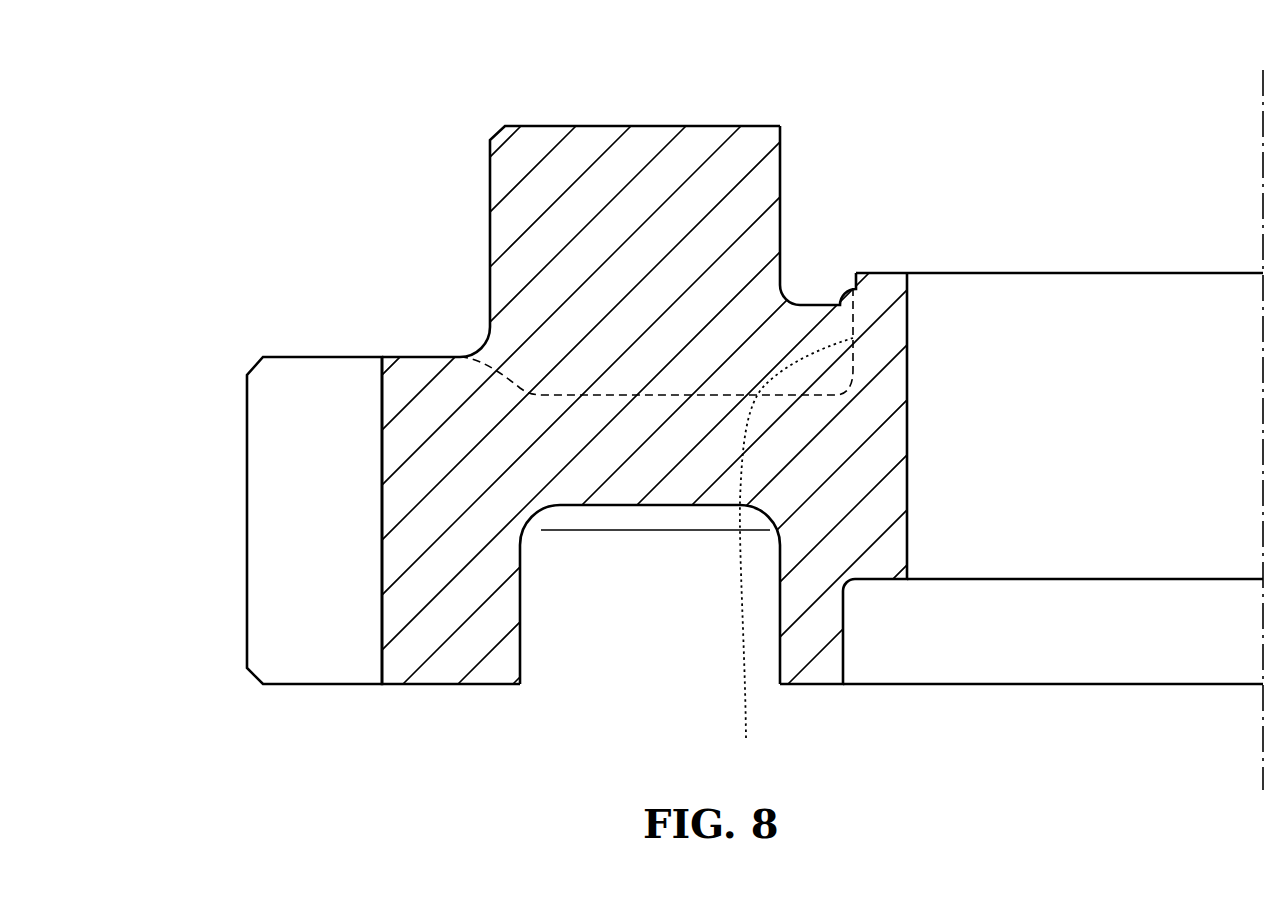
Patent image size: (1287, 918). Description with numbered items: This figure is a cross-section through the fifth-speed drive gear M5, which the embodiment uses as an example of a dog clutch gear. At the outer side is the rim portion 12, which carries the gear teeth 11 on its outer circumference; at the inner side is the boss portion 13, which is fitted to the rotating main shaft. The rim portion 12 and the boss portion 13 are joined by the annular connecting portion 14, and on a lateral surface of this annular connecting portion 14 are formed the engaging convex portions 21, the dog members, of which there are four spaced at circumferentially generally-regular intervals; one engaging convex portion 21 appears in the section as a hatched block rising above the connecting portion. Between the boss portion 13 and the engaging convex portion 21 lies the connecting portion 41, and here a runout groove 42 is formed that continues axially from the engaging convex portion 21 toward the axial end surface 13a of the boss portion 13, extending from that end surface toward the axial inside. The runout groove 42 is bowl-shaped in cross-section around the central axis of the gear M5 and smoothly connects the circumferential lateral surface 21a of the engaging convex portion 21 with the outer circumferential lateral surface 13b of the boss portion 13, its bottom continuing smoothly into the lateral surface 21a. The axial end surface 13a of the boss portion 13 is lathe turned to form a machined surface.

The fifth-speed drive gear M5 is at (502, 93).
The gear teeth 11 is at (290, 472).
The rim portion 12 is at (442, 514).
The boss portion 13 is at (873, 440).
The axial end surface of the boss portion 13a is at (880, 273).
The outer circumferential lateral surface of the boss portion 13b is at (790, 553).
The annular connecting portion 14 is at (645, 462).
The engaging convex portion 21 is at (640, 148).
The circumferential lateral surface of the engaging convex portion 21a is at (781, 183).
The connecting portion 41 is at (832, 327).
The runout groove 42 is at (822, 305).